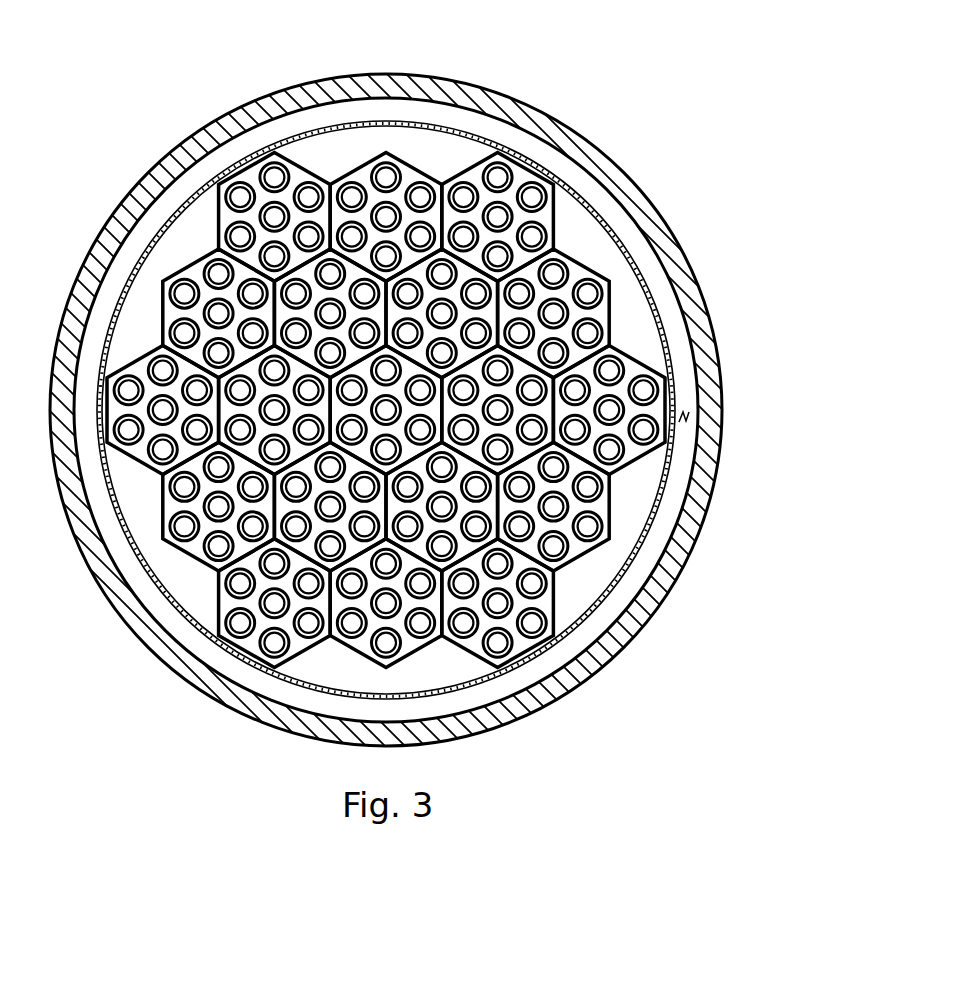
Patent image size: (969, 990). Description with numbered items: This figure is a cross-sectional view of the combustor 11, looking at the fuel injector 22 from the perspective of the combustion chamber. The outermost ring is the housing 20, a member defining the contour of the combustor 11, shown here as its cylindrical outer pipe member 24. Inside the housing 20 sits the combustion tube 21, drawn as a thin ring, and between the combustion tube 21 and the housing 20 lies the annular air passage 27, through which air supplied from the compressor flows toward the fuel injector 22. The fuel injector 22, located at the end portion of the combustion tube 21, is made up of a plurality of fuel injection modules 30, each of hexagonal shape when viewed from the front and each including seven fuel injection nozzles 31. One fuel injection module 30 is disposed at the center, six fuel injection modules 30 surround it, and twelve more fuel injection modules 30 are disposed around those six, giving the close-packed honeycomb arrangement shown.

The combustor 11 is at (714, 73).
The housing 20 is at (680, 232).
The combustion tube 21 is at (667, 330).
The fuel injector 22 is at (183, 228).
The outer pipe member 24 is at (702, 370).
The air passage 27 is at (690, 418).
The fuel injection module 30 is at (302, 165).
The fuel injection nozzle 31 is at (286, 166).